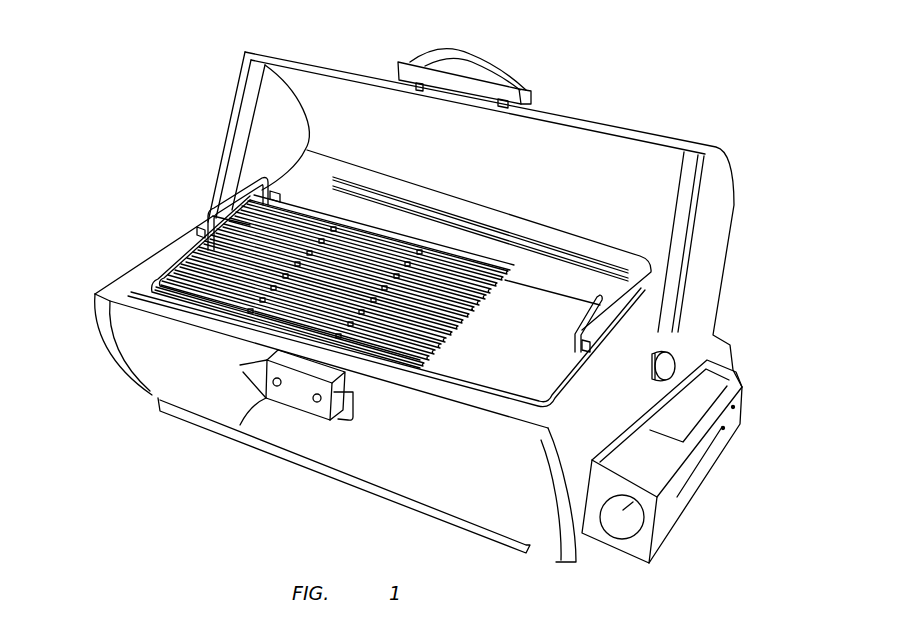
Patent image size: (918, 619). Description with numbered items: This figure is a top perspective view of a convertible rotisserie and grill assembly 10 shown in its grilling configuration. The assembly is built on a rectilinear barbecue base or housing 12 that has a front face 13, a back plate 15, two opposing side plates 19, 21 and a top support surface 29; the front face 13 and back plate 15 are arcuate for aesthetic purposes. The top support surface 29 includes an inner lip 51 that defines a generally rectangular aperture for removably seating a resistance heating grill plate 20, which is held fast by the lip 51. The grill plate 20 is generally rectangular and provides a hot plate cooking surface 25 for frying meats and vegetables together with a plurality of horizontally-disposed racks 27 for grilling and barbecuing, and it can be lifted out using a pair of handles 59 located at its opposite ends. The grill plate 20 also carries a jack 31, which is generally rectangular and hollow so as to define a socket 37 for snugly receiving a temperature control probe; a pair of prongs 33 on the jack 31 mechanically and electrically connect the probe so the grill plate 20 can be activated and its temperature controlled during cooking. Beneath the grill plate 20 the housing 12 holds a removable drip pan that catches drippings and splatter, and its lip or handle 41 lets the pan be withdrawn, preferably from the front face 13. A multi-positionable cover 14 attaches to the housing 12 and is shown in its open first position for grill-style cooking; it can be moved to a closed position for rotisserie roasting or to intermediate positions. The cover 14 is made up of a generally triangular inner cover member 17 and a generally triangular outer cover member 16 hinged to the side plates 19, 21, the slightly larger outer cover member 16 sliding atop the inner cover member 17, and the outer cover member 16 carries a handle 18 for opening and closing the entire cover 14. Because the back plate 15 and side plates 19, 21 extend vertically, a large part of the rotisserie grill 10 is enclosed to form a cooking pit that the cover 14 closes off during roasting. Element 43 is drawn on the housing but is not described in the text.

The convertible rotisserie and grill assembly 10 is at (131, 96).
The barbecue base or housing 12 is at (138, 295).
The front face 13 is at (419, 448).
The multi-positionable cover 14 is at (722, 143).
The back plate 15 is at (715, 299).
The outer cover member 16 is at (726, 242).
The inner cover member 17 is at (233, 128).
The handle 18 is at (488, 72).
The side plate 19 is at (110, 288).
The resistance heating grill plate 20 is at (353, 281).
The side plate 21 is at (625, 392).
The hot plate cooking surface 25 is at (493, 376).
The racks 27 is at (495, 318).
The top support surface 29 is at (175, 313).
The jack 31 is at (283, 408).
The prongs 33 is at (255, 410).
The socket 37 is at (283, 406).
The lip or handle 41 is at (735, 379).
The vent slot 43 is at (723, 428).
The inner lip 51 is at (546, 412).
The handles 59 is at (233, 200).